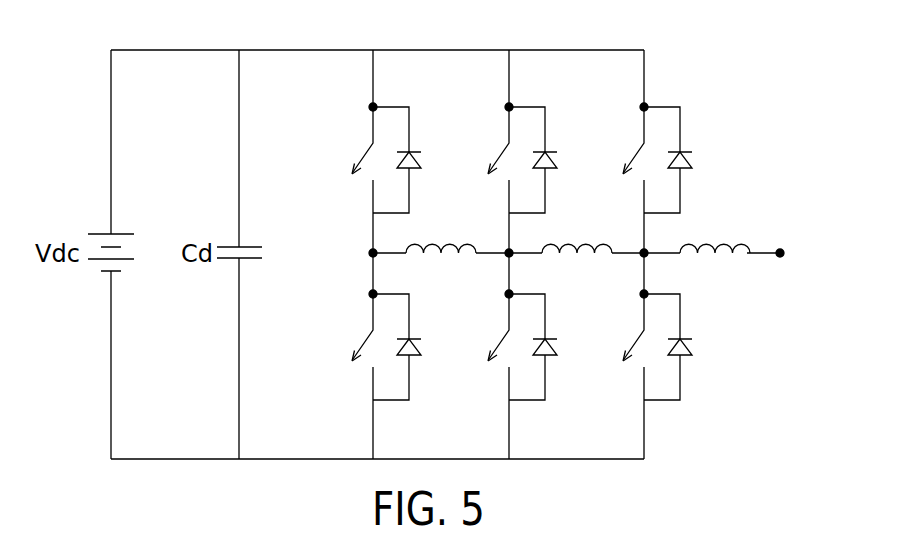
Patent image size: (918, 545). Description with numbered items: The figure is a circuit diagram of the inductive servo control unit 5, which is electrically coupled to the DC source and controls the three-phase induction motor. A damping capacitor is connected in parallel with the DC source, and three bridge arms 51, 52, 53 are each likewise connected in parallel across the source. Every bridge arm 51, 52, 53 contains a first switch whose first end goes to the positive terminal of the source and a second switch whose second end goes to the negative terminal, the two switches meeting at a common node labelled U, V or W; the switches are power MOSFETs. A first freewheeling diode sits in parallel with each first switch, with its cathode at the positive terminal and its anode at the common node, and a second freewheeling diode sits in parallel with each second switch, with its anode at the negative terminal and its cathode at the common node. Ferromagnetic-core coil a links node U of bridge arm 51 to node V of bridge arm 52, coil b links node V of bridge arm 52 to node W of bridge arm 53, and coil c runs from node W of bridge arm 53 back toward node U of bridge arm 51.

The inductive servo control unit 5 is at (712, 49).
The bridge arm 51 is at (364, 95).
The bridge arm 52 is at (500, 95).
The bridge arm 53 is at (635, 95).